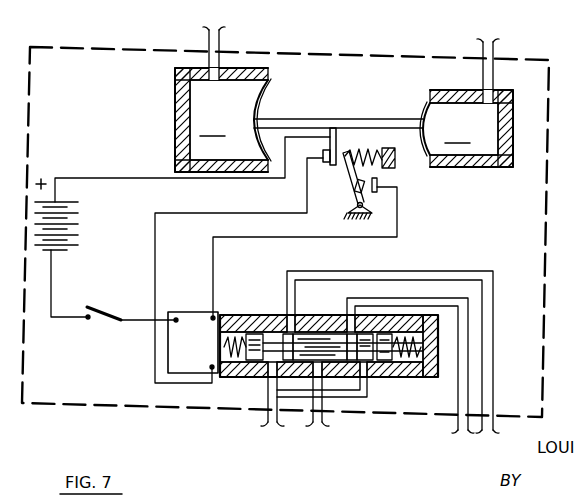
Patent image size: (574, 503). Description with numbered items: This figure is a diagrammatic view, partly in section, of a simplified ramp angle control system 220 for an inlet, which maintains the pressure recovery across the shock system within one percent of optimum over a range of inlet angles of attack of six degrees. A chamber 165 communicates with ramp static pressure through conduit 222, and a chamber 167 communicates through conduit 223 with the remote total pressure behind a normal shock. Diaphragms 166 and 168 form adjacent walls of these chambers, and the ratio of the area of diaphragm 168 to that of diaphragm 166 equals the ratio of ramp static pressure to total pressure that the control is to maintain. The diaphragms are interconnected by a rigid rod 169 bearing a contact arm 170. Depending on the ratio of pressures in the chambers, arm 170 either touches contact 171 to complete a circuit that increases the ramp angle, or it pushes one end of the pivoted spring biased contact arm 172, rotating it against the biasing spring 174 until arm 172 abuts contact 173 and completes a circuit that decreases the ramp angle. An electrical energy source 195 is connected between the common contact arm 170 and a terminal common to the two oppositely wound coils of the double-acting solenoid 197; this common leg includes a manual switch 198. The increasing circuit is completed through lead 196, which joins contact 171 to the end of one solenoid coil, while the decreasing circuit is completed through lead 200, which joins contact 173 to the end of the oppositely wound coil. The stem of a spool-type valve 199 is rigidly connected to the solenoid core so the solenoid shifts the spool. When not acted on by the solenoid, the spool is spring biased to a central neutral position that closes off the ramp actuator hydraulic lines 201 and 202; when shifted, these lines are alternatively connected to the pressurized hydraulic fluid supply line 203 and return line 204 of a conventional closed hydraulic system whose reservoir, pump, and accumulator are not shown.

The chamber 165 is at (198, 92).
The diaphragm 166 is at (263, 98).
The chamber 167 is at (488, 138).
The diaphragm 168 is at (427, 110).
The rigid rod 169 is at (282, 118).
The contact arm 170 is at (330, 146).
The contact 171 is at (327, 163).
The pivoted spring biased contact arm 172 is at (355, 188).
The contact 173 is at (380, 178).
The biasing spring 174 is at (366, 148).
The electrical energy source 195 is at (60, 203).
The lead 196 is at (155, 226).
The double-acting solenoid 197 is at (193, 330).
The manual switch 198 is at (112, 304).
The spool-type valve 199 is at (384, 348).
The lead 200 is at (398, 211).
The ramp actuator hydraulic line 201 is at (480, 280).
The ramp actuator hydraulic line 202 is at (458, 423).
The pressurized hydraulic fluid supply line 203 is at (321, 414).
The return line 204 is at (262, 412).
The ramp angle control system 220 is at (368, 43).
The conduit 222 is at (216, 42).
The conduit 223 is at (495, 54).